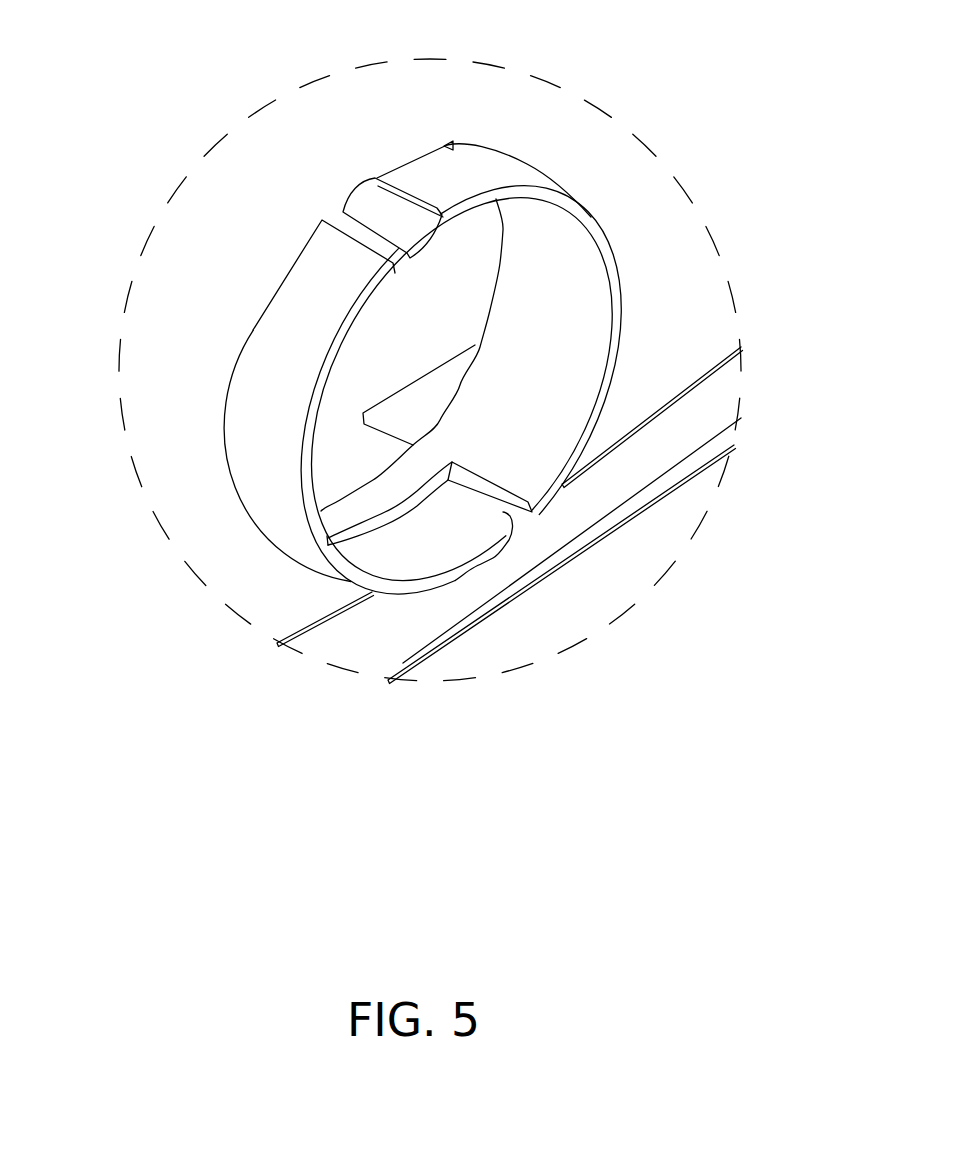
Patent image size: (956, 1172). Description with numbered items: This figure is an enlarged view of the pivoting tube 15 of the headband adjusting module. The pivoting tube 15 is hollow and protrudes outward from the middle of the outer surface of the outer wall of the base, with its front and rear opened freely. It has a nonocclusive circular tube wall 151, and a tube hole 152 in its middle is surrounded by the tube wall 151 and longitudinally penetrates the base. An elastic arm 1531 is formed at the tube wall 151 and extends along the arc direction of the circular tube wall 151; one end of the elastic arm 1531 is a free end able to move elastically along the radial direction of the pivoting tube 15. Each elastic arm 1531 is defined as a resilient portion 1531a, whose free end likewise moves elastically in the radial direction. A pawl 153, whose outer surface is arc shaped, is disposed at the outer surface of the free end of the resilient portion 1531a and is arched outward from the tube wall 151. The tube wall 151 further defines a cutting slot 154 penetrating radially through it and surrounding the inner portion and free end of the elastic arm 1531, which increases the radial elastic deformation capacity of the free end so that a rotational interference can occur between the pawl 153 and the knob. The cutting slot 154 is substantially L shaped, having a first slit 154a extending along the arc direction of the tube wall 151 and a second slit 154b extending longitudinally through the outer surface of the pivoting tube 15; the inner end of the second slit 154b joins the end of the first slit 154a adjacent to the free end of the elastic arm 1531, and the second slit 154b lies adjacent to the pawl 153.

The pivoting tube 15 is at (207, 507).
The tube wall 151 is at (593, 217).
The tube hole 152 is at (565, 328).
The pawl 153 is at (380, 207).
The elastic arm 1531 is at (440, 110).
The resilient portion 1531a is at (440, 177).
The cutting slot 154 is at (365, 237).
The first slit 154a is at (383, 523).
The second slit 154b is at (483, 493).